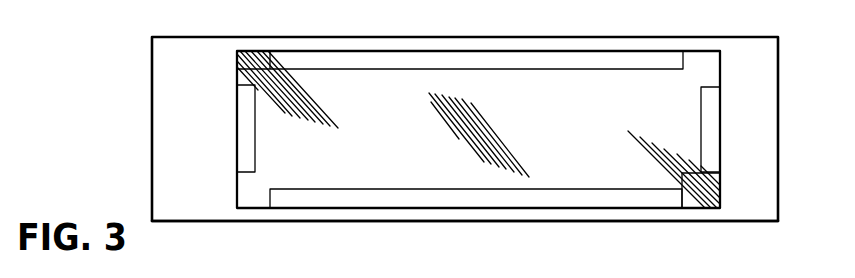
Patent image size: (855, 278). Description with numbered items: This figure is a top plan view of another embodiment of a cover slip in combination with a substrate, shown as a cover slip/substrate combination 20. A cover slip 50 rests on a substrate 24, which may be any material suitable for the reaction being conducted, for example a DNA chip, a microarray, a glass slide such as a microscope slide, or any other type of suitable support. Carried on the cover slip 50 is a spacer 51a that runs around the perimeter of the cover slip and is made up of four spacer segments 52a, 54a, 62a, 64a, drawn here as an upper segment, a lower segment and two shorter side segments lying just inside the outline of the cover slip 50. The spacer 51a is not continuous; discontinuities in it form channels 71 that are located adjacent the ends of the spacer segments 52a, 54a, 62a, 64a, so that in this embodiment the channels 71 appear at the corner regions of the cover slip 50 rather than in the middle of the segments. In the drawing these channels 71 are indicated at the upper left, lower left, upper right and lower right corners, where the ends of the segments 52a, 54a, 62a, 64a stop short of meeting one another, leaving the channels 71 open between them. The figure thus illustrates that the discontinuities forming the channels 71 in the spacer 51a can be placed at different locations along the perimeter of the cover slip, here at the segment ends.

The cover slip/substrate combination 20 is at (90, 107).
The substrate 24 is at (732, 222).
The cover slip 50 is at (722, 132).
The spacer 51a is at (493, 72).
The spacer segment 52a is at (392, 70).
The spacer segment 54a is at (406, 188).
The spacer segment 62a is at (702, 93).
The spacer segment 64a is at (255, 145).
The channel 71 is at (257, 68).